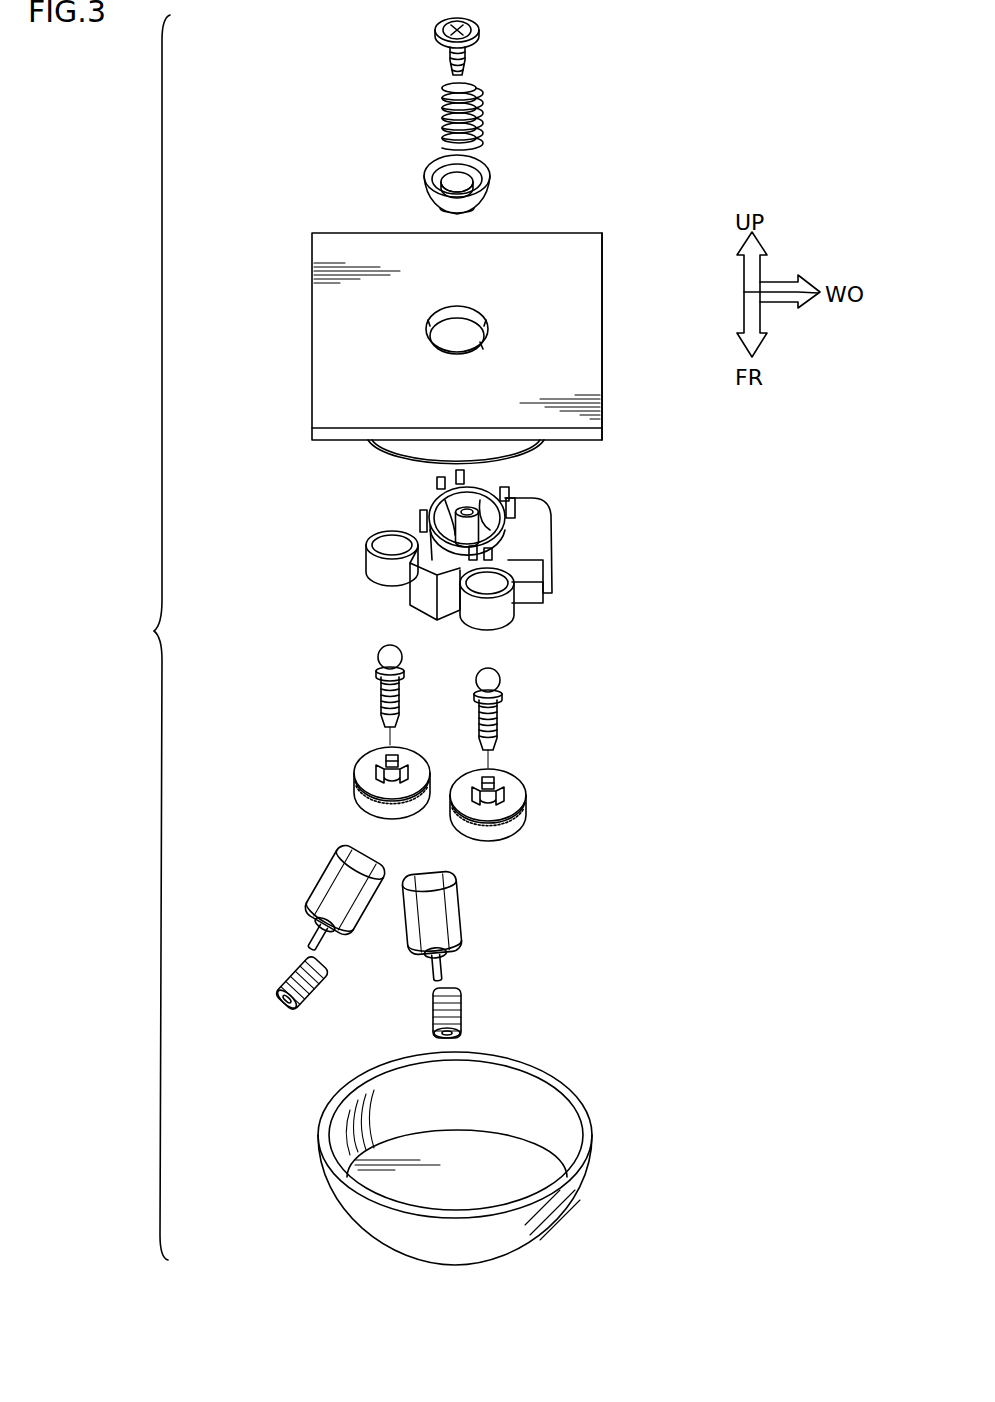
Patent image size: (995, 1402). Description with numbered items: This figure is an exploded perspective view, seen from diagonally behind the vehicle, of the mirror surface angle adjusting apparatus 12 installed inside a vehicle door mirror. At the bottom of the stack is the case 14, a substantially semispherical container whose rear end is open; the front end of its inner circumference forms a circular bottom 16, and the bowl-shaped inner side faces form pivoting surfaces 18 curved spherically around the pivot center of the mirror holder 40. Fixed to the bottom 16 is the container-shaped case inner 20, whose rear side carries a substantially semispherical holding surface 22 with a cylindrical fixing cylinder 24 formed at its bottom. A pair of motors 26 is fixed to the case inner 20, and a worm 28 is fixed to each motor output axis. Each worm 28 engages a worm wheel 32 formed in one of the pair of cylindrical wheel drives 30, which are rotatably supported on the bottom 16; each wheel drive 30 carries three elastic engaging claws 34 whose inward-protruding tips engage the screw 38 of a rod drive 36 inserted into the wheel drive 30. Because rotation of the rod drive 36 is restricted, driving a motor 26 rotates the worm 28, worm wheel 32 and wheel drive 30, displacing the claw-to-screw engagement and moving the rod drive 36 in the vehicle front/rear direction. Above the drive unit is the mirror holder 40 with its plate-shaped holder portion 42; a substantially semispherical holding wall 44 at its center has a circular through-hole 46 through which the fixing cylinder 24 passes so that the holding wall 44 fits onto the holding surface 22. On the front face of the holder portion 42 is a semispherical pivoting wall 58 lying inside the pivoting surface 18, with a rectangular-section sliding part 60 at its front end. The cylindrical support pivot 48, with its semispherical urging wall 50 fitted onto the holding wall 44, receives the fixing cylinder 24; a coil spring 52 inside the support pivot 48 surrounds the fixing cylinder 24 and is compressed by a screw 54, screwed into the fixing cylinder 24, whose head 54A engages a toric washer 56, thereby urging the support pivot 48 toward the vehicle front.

The mirror surface angle adjusting apparatus 12 is at (276, 108).
The case 14 is at (418, 1139).
The bottom 16 is at (415, 1145).
The pivoting surfaces 18 is at (504, 1118).
The case inner 20 is at (491, 560).
The holding surface 22 is at (430, 510).
The fixing cylinder 24 is at (440, 610).
The motors 26 is at (345, 878).
The worm 28 is at (285, 978).
The wheel drives 30 is at (442, 794).
The worm wheel 32 is at (375, 815).
The engaging claws 34 is at (398, 755).
The rod drive 36 is at (373, 648).
The screw 38 is at (444, 698).
The mirror holder 40 is at (460, 328).
The holder portion 42 is at (608, 226).
The holding wall 44 is at (496, 318).
The through-hole 46 is at (483, 342).
The support pivot 48 is at (442, 178).
The urging wall 50 is at (490, 178).
The coil spring 52 is at (440, 108).
The screw 54 is at (470, 44).
The head 54A is at (479, 24).
The washer 56 is at (466, 50).
The pivoting wall 58 is at (392, 452).
The sliding part 60 is at (525, 455).